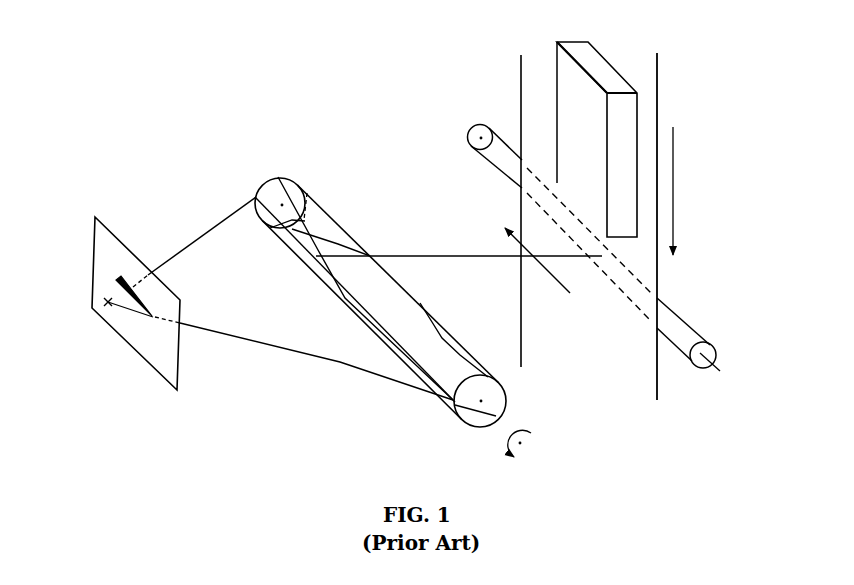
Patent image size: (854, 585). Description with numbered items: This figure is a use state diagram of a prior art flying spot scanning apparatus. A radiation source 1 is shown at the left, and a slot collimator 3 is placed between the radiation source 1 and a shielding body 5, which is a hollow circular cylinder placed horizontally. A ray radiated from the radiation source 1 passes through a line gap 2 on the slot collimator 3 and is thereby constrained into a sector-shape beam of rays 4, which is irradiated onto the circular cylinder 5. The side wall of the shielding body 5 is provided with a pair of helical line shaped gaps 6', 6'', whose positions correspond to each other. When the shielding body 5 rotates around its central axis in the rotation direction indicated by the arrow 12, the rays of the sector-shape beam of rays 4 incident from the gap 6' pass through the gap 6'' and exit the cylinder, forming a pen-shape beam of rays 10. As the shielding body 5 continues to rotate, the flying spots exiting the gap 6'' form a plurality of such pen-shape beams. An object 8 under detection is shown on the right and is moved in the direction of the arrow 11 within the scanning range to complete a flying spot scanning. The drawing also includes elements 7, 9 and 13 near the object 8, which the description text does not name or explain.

The object point 1 is at (107, 313).
The light direction arrow 2 is at (151, 317).
The object plane 3 is at (128, 247).
The light ray 4 is at (268, 346).
The rotating cylinder 5 is at (332, 210).
The first slit 6' is at (355, 289).
The second slit 6'' is at (395, 285).
The cylindrical lens 7 is at (490, 163).
The detector 8 is at (610, 60).
The recording medium 9 is at (660, 110).
The light beam 10 is at (461, 254).
The feed direction 11 is at (676, 204).
The rotation direction 12 is at (527, 452).
The scanning direction 13 is at (529, 249).